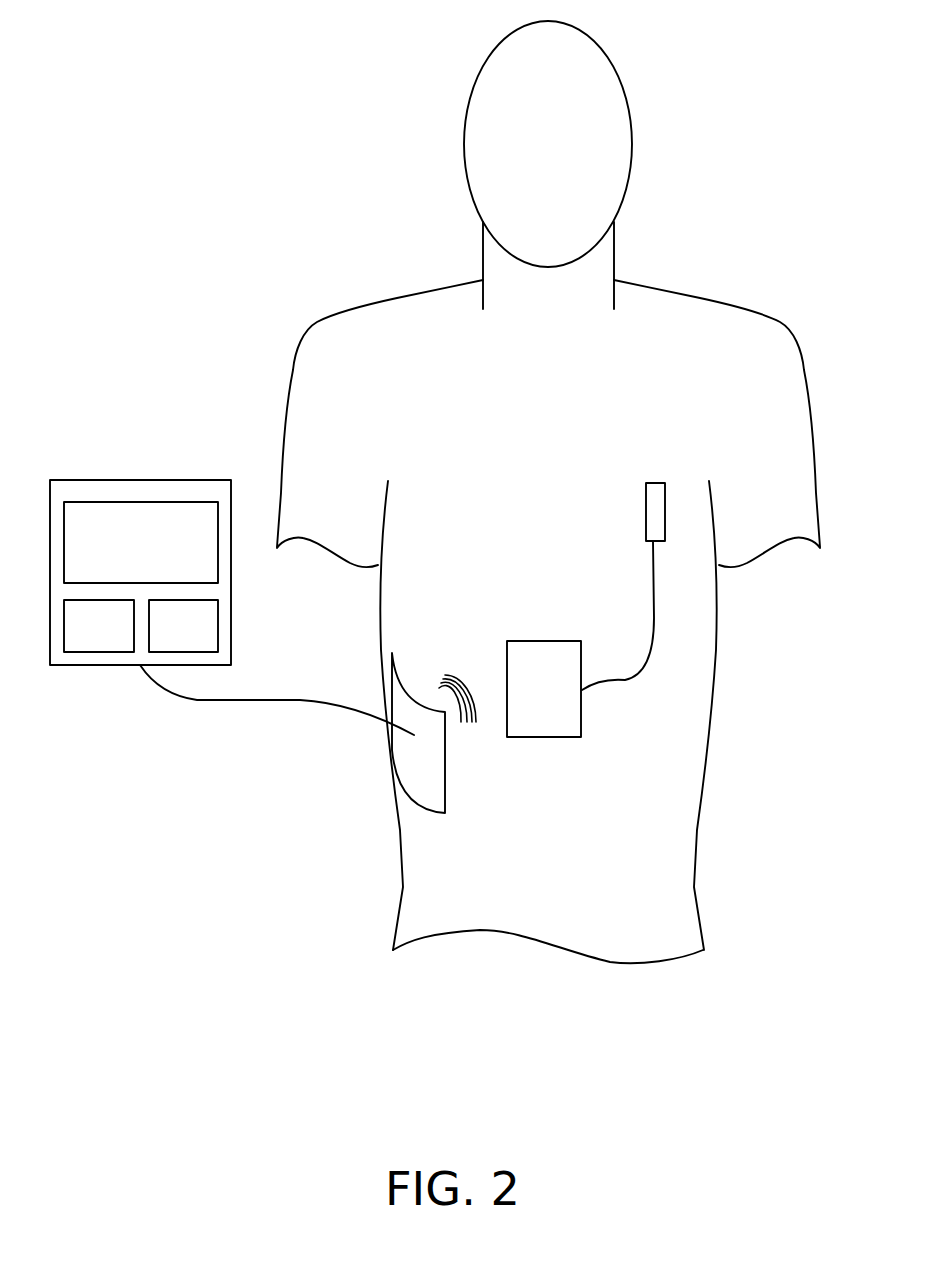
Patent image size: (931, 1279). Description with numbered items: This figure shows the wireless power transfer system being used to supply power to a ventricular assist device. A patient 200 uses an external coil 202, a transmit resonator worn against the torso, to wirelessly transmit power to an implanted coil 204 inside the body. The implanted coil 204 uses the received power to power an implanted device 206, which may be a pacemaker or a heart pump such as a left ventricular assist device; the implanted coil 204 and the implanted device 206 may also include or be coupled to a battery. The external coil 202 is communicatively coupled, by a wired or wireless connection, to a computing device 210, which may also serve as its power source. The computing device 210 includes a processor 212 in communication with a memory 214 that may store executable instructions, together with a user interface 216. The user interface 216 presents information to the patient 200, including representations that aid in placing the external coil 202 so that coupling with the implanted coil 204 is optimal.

The patient 200 is at (370, 103).
The external coil 202 is at (415, 768).
The implanted coil 204 is at (555, 737).
The implanted device 206 is at (665, 523).
The computing device 210 is at (232, 567).
The processor 212 is at (121, 639).
The memory 214 is at (207, 639).
The user interface 216 is at (164, 555).